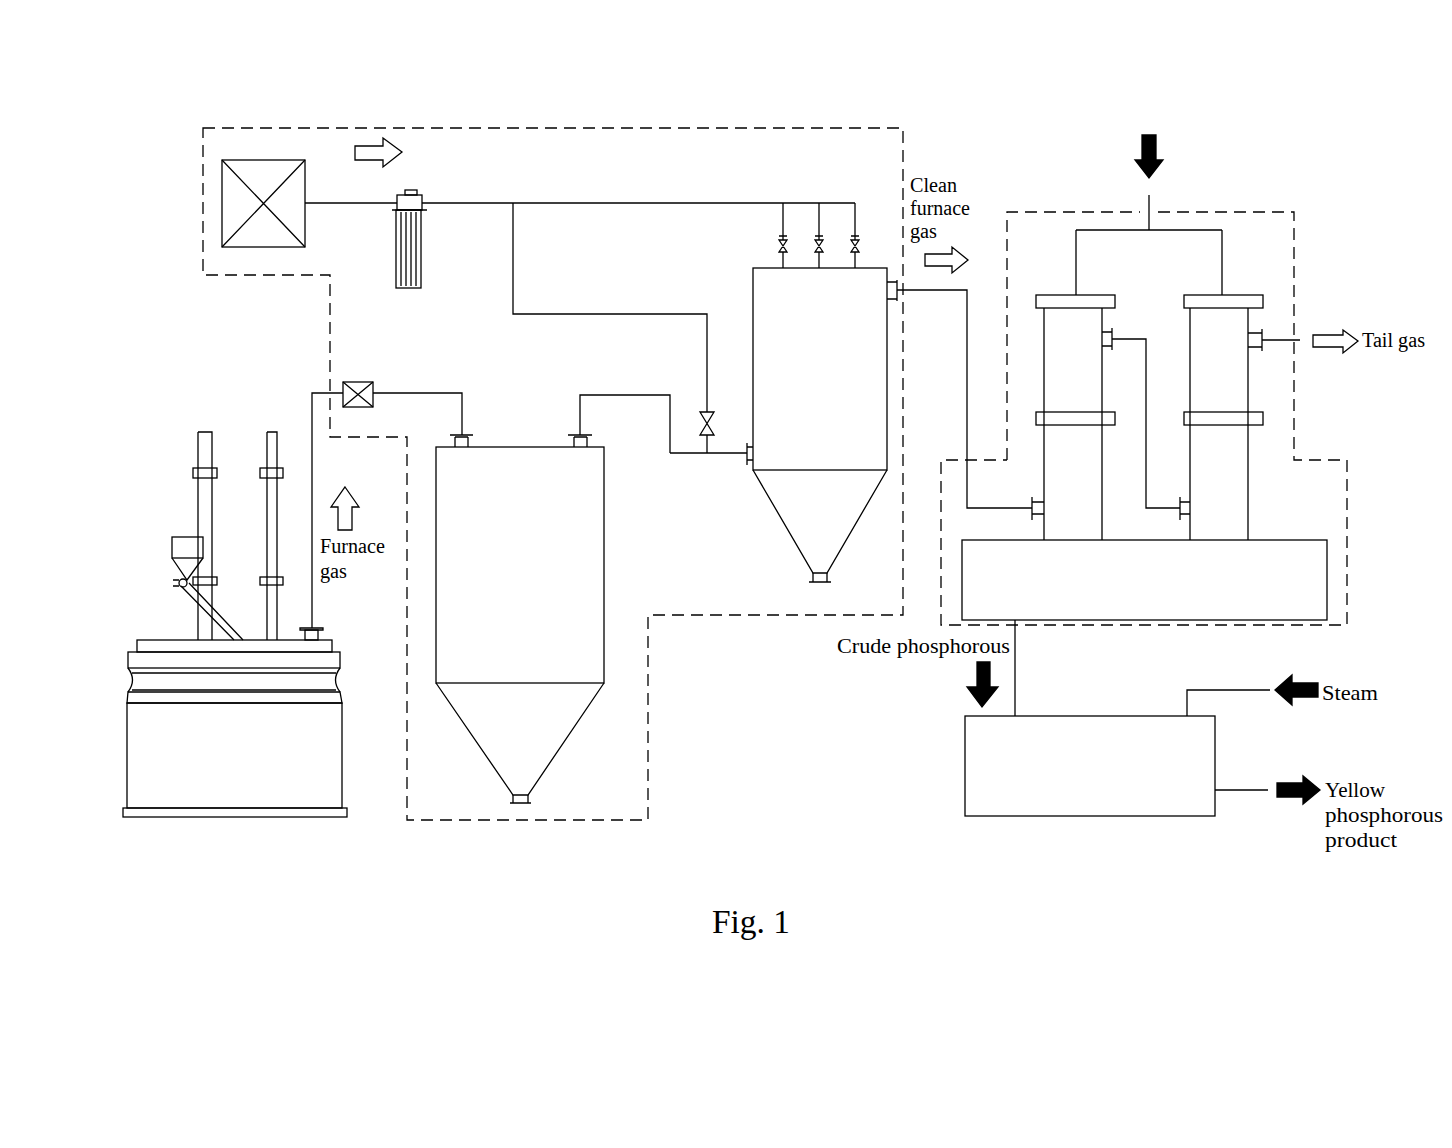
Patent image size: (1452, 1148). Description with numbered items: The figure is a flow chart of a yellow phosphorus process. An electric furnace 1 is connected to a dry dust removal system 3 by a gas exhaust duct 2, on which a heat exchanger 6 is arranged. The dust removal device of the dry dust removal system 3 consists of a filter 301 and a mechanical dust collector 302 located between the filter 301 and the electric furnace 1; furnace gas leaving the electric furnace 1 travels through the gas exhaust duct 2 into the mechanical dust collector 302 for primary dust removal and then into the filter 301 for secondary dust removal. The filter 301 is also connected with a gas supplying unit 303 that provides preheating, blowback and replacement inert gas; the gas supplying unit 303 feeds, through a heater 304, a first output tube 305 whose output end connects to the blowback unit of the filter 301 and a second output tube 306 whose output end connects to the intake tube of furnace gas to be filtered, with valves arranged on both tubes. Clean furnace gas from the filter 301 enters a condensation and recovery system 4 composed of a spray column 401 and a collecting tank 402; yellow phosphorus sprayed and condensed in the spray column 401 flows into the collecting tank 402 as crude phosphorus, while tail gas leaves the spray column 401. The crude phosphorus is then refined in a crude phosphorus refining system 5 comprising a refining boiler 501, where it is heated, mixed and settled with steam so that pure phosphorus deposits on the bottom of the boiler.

The electric furnace 1 is at (240, 766).
The gas exhaust duct 2 is at (310, 415).
The dry dust removal system 3 is at (572, 127).
The filter 301 is at (838, 382).
The mechanical dust collector 302 is at (534, 586).
The gas supplying unit 303 is at (306, 220).
The heater 304 is at (423, 250).
The first output tube 305 is at (647, 207).
The second output tube 306 is at (609, 314).
The condensation and recovery system 4 is at (1240, 212).
The spray column 401 is at (1092, 401).
The collecting tank 402 is at (1158, 587).
The crude phosphorus refining system 5 is at (1097, 692).
The refining boiler 501 is at (1104, 771).
The heat exchanger 6 is at (357, 382).